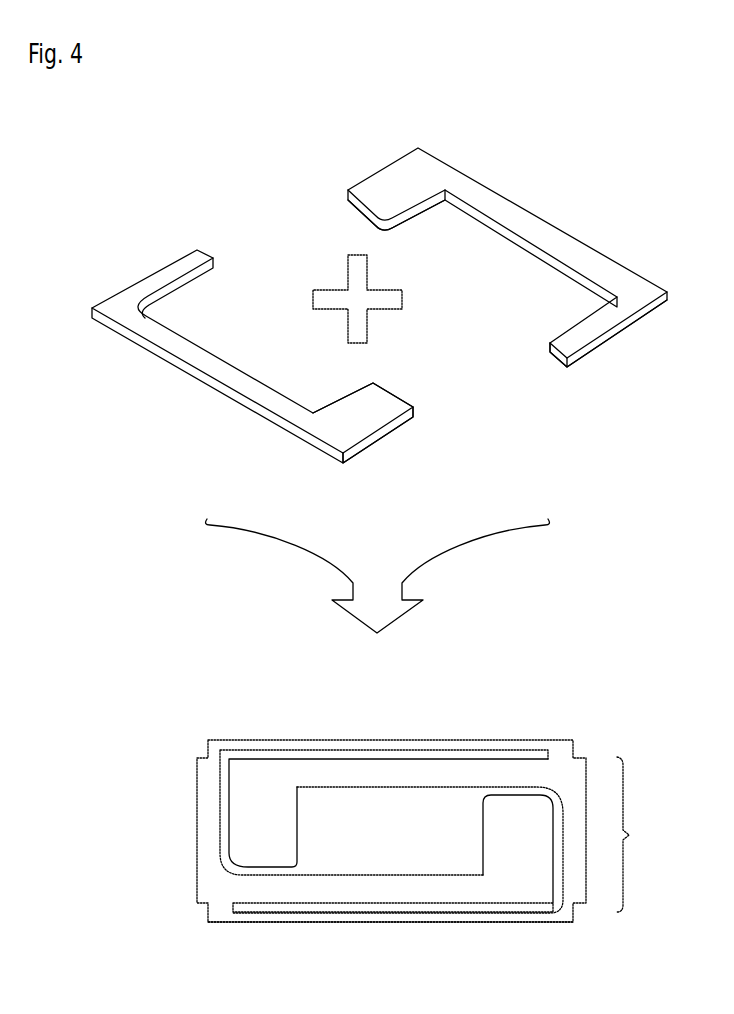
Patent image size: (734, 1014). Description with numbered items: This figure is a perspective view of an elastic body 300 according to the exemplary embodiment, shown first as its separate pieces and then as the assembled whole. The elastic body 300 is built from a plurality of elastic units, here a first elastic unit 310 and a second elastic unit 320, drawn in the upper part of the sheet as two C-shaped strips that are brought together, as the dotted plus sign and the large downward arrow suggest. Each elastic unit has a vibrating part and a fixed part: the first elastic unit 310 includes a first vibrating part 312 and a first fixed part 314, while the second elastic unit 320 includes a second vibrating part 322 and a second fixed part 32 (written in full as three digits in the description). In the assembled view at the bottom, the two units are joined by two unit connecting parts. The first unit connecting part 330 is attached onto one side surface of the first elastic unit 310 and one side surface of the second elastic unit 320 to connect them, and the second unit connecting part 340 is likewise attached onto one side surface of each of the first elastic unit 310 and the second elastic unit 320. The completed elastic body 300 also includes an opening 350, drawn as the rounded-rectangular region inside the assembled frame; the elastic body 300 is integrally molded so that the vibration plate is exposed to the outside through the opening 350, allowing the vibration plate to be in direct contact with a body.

The elastic body 300 is at (638, 834).
The first elastic unit 310 is at (96, 243).
The first vibrating part 312 is at (363, 428).
The first fixed part 314 is at (194, 251).
The second elastic unit 320 is at (622, 191).
The second vibrating part 322 is at (430, 173).
The second fixed part 32 is at (607, 325).
The first unit connecting part 330 is at (303, 740).
The second unit connecting part 340 is at (288, 923).
The opening 350 is at (453, 828).